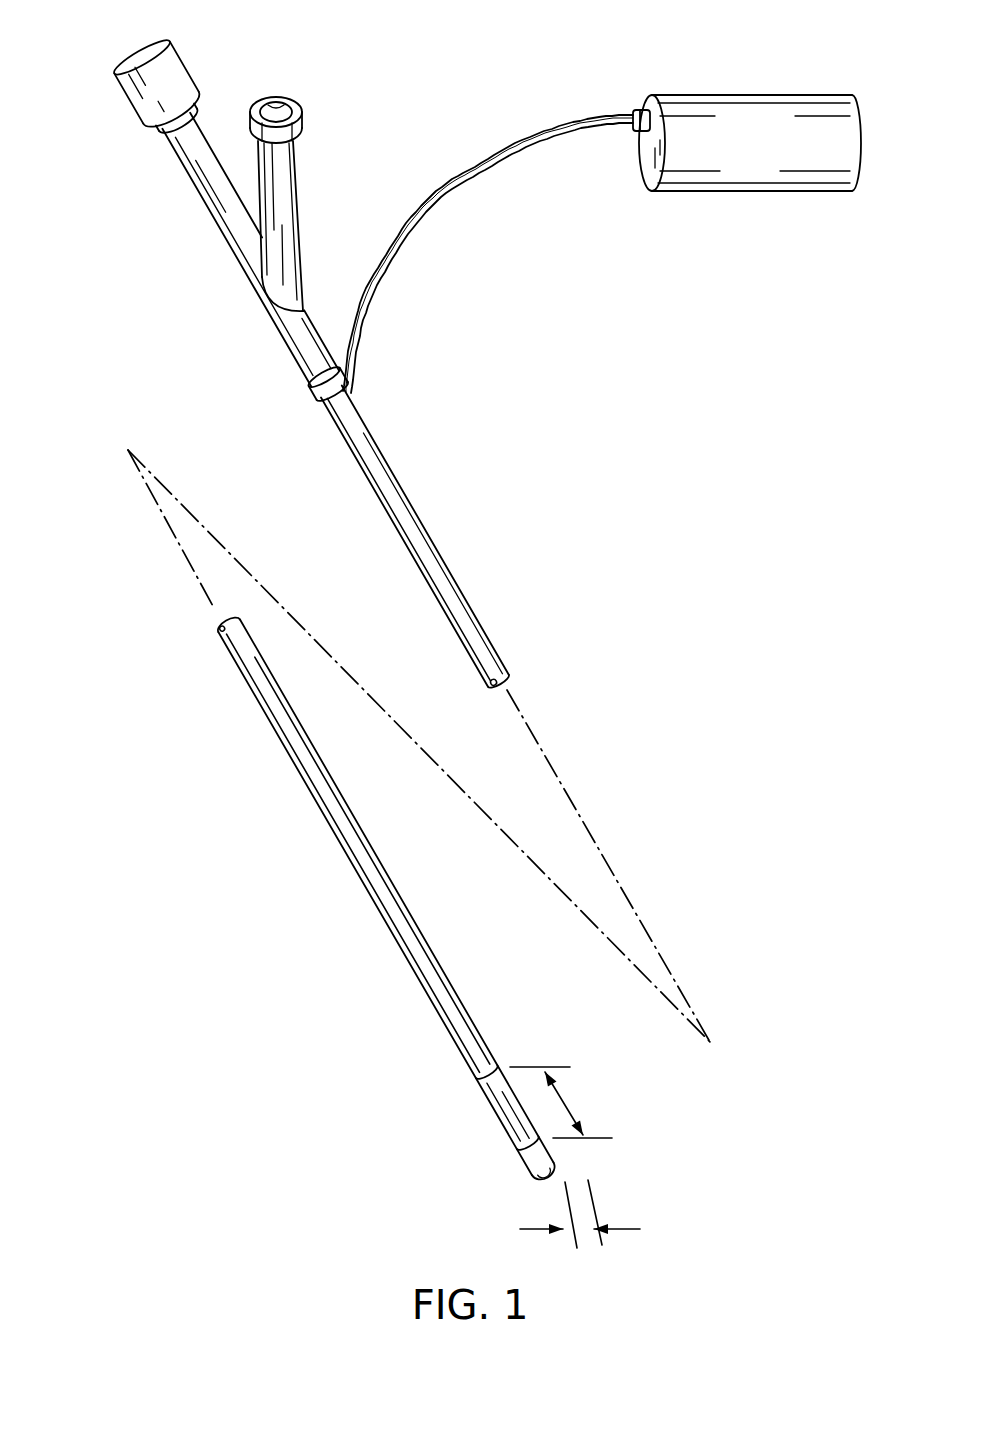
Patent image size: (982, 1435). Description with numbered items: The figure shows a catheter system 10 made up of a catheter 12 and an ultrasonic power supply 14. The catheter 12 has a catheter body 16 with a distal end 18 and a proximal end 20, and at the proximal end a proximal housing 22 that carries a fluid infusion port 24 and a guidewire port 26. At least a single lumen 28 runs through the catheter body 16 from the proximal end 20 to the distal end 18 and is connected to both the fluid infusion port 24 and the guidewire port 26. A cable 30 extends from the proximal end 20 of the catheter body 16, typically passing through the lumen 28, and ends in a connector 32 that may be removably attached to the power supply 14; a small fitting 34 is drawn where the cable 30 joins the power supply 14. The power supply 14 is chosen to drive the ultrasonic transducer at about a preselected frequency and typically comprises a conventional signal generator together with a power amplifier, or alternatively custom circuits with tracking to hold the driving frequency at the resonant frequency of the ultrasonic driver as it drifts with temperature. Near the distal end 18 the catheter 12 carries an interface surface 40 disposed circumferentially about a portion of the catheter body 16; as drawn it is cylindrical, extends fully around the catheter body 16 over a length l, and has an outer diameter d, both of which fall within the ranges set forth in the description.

The catheter system 10 is at (373, 47).
The catheter 12 is at (484, 554).
The ultrasonic power supply 14 is at (753, 160).
The catheter body 16 is at (410, 528).
The distal end 18 is at (585, 1160).
The proximal end 20 is at (378, 398).
The proximal housing 22 is at (205, 176).
The fluid infusion port 24 is at (290, 186).
The guidewire port 26 is at (133, 63).
The lumen 28 is at (510, 690).
The cable 30 is at (548, 1190).
The connector 32 is at (455, 190).
The fitting 34 is at (638, 113).
The interface surface 40 is at (498, 1100).